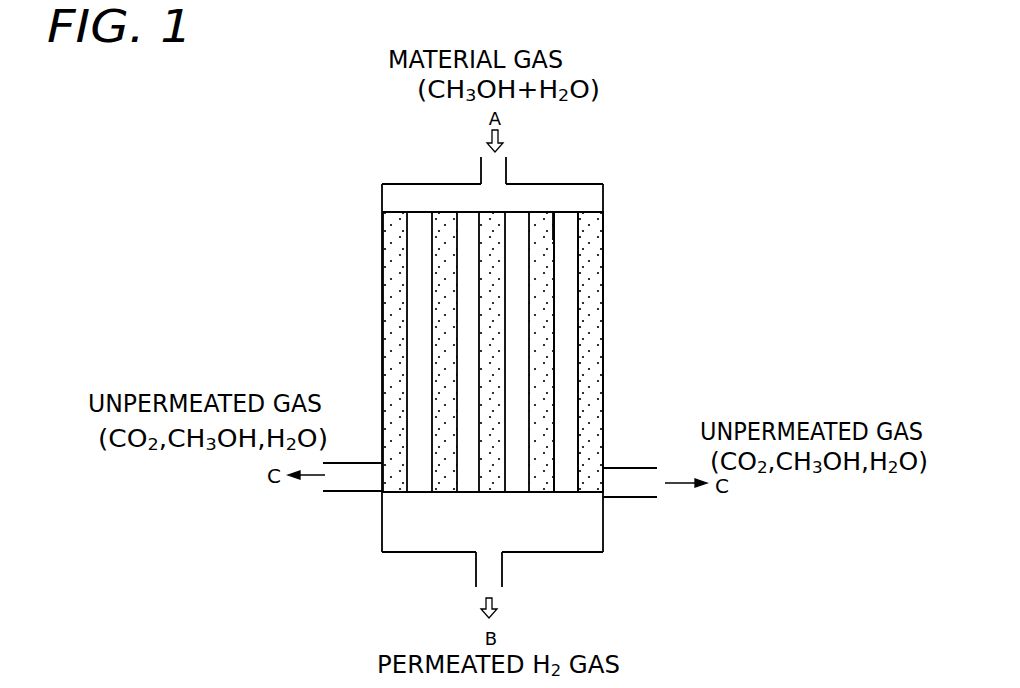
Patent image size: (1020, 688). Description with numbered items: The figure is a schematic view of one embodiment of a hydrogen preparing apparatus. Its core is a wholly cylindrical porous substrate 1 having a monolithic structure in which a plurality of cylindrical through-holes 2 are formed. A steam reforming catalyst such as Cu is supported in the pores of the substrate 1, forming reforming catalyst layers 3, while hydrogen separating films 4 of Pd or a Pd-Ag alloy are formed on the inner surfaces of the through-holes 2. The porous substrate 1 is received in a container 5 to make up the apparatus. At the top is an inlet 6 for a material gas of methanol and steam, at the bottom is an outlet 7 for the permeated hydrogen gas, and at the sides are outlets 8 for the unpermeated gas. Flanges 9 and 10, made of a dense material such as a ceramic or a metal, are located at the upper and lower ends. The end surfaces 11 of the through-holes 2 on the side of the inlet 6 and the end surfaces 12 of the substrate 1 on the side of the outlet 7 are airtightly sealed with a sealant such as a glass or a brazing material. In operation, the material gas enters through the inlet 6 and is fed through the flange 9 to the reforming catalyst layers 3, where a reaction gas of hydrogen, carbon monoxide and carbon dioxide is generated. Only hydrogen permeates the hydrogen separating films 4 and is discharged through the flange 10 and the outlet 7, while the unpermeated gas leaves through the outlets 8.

The porous substrate 1 is at (603, 350).
The cylindrical through-holes 2 is at (567, 313).
The reforming catalyst layers 3 is at (603, 247).
The hydrogen separating films 4 is at (553, 237).
The container 5 is at (372, 258).
The inlet for a material gas 6 is at (500, 173).
The outlet for a permeated hydrogen gas 7 is at (493, 568).
The outlet for an unpermeated gas 8 is at (356, 470).
The flange 9 is at (383, 197).
The flange 10 is at (392, 525).
The end surfaces of the cylindrical through-holes 11 is at (419, 210).
The end surfaces of the porous substrate 12 is at (545, 497).